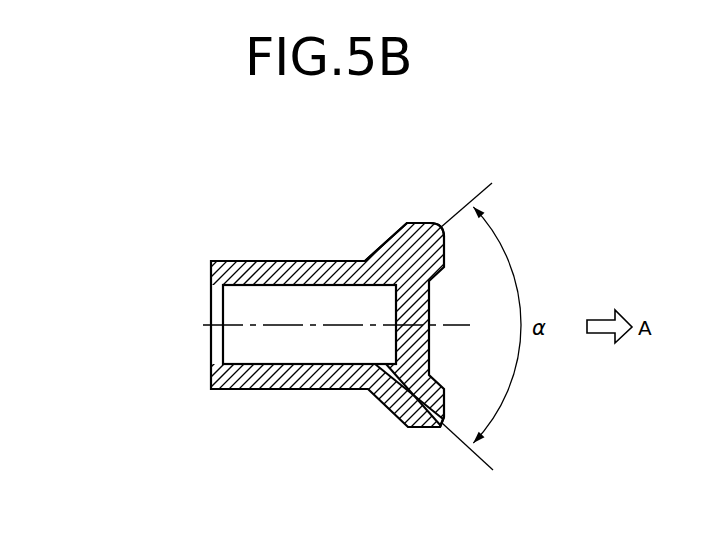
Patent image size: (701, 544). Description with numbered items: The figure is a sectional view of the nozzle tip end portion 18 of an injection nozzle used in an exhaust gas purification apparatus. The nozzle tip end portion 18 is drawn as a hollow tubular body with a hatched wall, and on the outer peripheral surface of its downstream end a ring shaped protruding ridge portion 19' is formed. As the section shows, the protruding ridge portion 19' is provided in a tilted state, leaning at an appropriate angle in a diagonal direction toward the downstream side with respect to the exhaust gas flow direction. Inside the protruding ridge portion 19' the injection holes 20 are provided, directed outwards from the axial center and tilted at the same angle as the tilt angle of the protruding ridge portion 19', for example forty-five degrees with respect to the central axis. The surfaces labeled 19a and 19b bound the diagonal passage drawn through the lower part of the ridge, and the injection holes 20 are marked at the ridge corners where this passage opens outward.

The nozzle tip end portion 18 is at (314, 389).
The protruding ridge portion 19' is at (386, 238).
The slit surface 19a is at (418, 427).
The slit surface 19b is at (446, 402).
The injection holes 20 is at (438, 225).